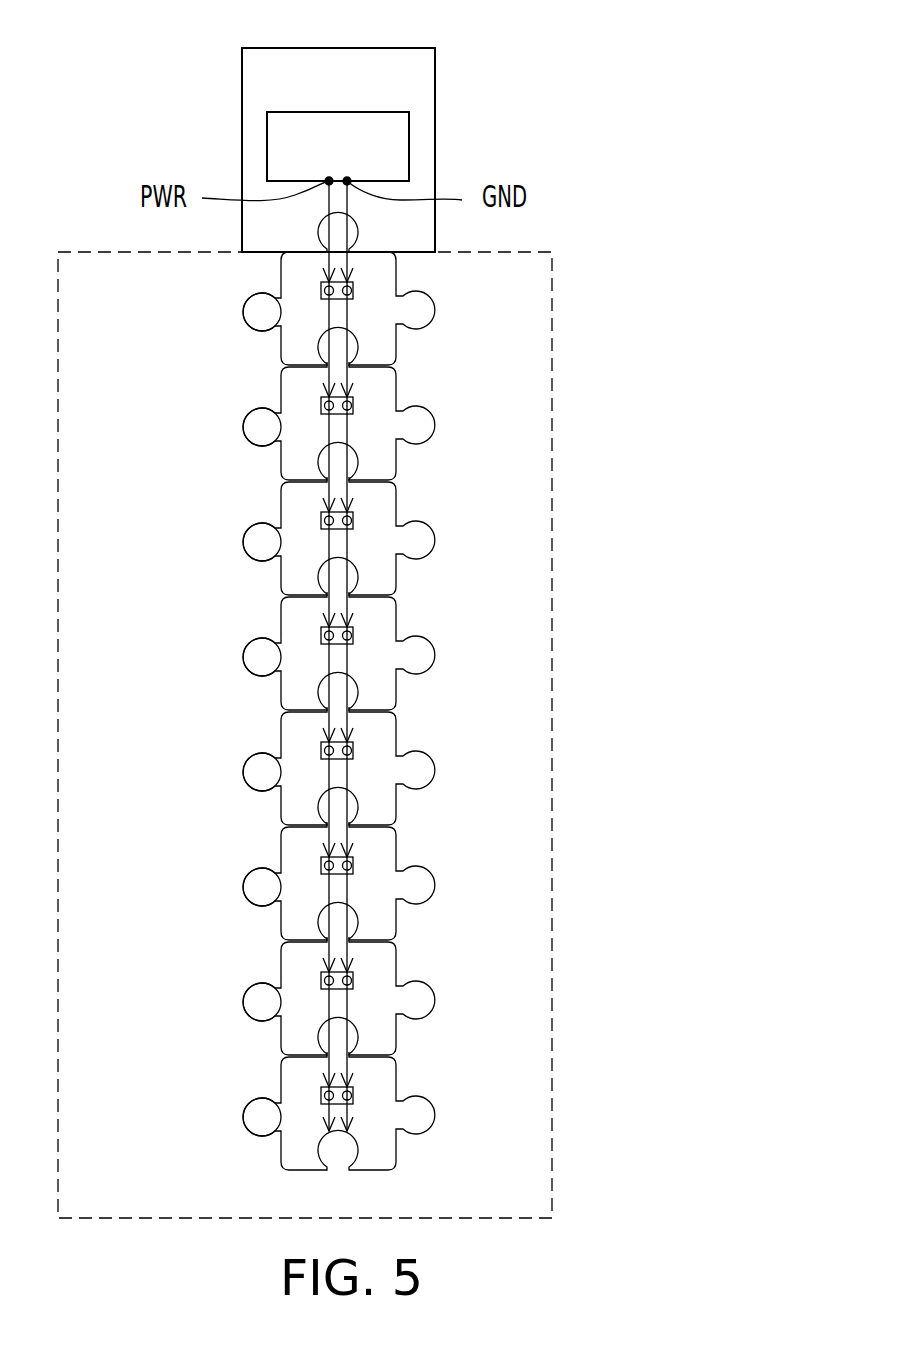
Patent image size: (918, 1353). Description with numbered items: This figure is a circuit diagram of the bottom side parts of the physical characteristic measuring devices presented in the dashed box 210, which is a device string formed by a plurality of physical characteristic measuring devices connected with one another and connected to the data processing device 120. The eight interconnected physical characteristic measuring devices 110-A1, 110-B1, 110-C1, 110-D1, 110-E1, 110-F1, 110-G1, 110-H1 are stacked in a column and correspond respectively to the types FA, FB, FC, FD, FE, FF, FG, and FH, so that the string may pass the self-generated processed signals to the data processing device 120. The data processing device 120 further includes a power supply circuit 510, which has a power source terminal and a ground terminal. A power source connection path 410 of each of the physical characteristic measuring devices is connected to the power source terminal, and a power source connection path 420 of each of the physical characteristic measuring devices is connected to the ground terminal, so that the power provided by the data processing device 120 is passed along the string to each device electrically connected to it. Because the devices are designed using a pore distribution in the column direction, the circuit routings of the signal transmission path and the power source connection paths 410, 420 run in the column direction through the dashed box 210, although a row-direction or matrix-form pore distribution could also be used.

The data processing device 120 is at (395, 48).
The power supply circuit 510 is at (410, 147).
The dashed box 210 is at (553, 1080).
The power source connection path 410 is at (345, 264).
The power source connection path 420 is at (345, 264).
The physical characteristic measuring device 110-A1 is at (243, 312).
The physical characteristic measuring device 110-B1 is at (243, 427).
The physical characteristic measuring device 110-C1 is at (243, 542).
The physical characteristic measuring device 110-D1 is at (243, 657).
The physical characteristic measuring device 110-E1 is at (243, 772).
The physical characteristic measuring device 110-F1 is at (243, 887).
The physical characteristic measuring device 110-G1 is at (243, 1002).
The physical characteristic measuring device 110-H1 is at (243, 1117).